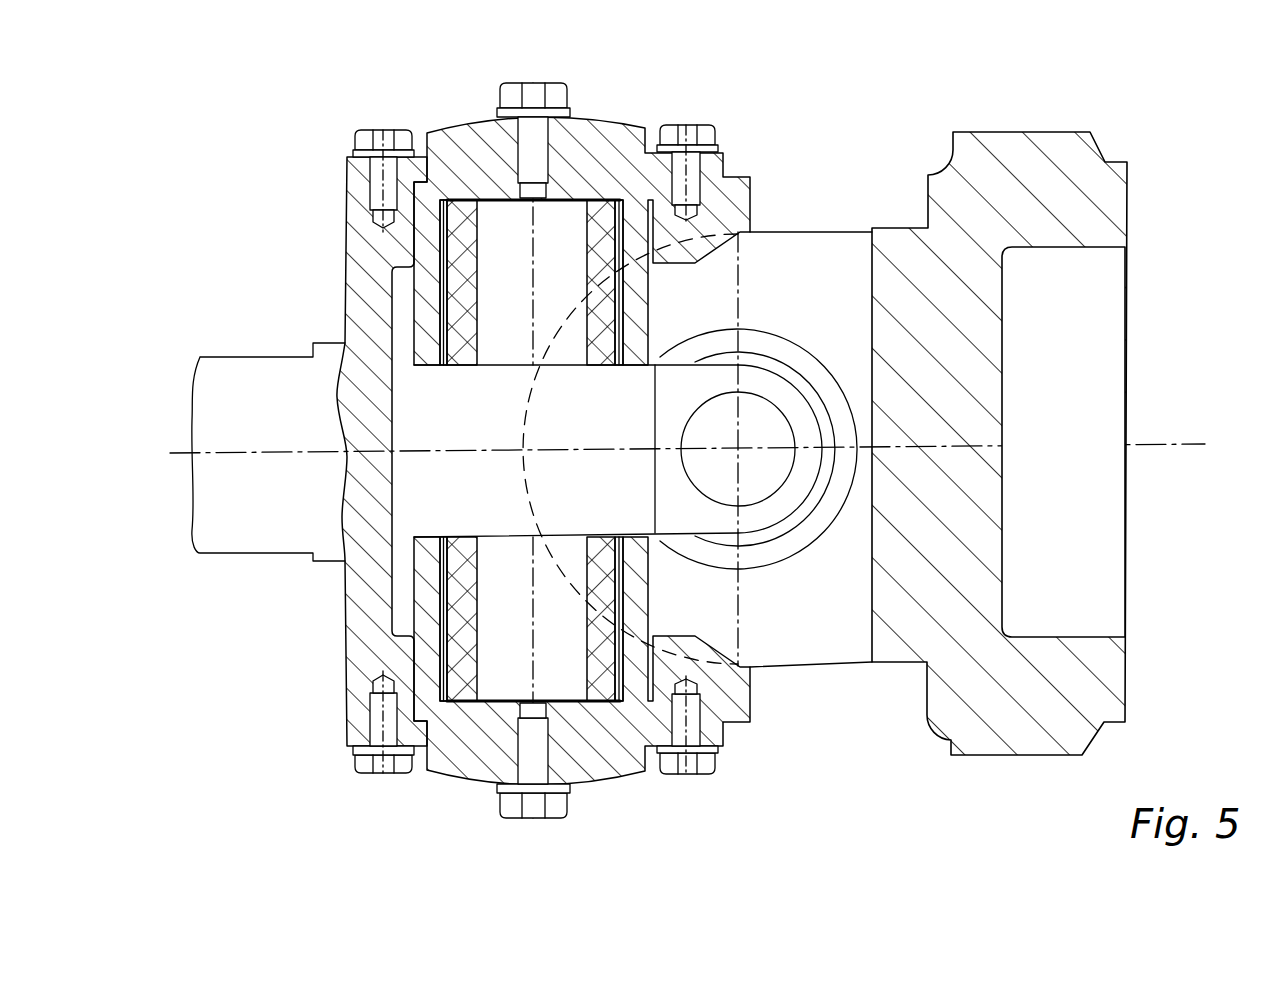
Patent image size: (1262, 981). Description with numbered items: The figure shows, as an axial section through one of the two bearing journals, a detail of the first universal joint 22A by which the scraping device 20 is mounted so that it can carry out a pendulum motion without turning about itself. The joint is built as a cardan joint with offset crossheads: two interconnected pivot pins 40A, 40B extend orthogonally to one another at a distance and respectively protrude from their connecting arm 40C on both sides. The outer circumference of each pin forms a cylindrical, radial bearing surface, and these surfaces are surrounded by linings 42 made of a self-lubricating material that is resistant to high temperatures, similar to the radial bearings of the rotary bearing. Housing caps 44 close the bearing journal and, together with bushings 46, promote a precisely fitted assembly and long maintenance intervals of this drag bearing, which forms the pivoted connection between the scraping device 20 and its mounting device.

The scraping device 20 is at (1070, 118).
The first universal joint 22A is at (760, 98).
The pivot pin 40A is at (570, 282).
The pivot pin 40B is at (770, 493).
The connecting arm 40C is at (672, 502).
The lining 42 is at (615, 366).
The housing cap 44 is at (595, 170).
The bushing 46 is at (445, 198).